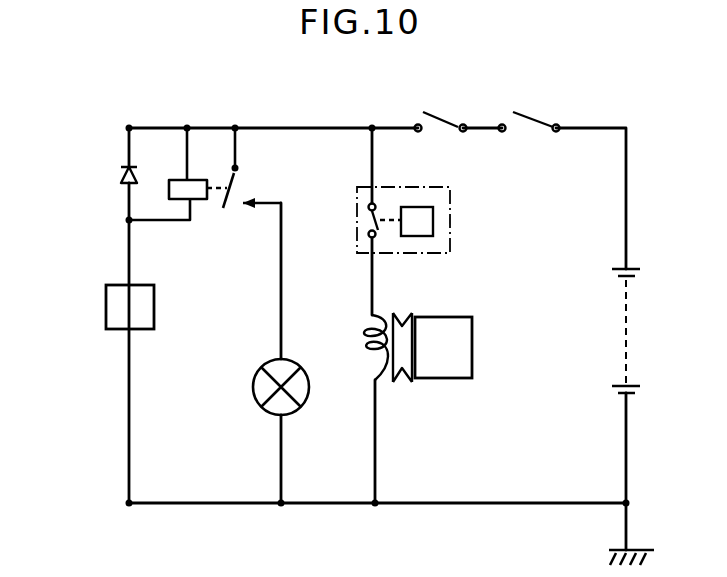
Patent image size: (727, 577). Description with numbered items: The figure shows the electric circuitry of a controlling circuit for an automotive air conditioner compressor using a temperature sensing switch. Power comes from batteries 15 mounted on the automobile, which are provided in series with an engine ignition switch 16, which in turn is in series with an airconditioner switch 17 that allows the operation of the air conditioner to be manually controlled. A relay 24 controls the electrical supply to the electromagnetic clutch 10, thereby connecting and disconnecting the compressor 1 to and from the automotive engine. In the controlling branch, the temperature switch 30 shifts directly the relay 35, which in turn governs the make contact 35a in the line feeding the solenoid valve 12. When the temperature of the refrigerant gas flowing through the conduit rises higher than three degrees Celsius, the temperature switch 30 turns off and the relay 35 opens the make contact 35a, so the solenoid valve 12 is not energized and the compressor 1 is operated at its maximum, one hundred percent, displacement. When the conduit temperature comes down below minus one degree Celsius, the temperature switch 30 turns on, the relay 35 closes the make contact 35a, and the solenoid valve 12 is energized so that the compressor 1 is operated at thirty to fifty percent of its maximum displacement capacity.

The compressor 1 is at (462, 340).
The electromagnetic clutch 10 is at (398, 372).
The solenoid valve 12 is at (262, 388).
The batteries 15 is at (623, 328).
The engine ignition switch 16 is at (537, 113).
The airconditioner switch 17 is at (447, 117).
The relay 24 is at (440, 237).
The temperature switch 30 is at (105, 307).
The relay 35 is at (196, 187).
The make contact 35a is at (233, 182).